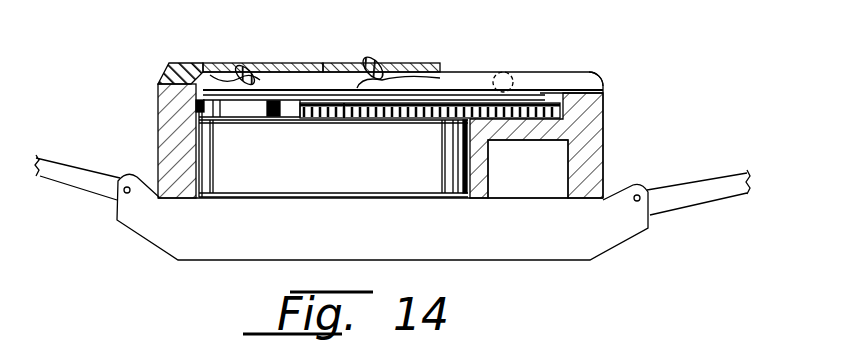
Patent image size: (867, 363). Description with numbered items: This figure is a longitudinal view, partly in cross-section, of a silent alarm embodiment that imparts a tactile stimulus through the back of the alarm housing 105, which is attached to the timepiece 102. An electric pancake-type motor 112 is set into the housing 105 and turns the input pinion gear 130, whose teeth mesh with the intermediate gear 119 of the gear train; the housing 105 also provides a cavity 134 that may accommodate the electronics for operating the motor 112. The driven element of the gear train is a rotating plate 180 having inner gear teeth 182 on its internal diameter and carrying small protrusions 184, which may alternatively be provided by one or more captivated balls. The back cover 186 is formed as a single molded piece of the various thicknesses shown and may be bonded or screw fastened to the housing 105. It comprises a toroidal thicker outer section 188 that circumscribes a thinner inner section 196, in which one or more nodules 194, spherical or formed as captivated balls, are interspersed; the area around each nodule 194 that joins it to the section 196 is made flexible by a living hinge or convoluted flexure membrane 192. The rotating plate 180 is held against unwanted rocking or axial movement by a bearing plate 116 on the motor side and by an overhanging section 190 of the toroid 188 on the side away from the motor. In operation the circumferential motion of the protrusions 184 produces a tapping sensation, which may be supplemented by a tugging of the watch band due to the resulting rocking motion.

The timepiece 102 is at (404, 238).
The alarm housing 105 is at (602, 146).
The electric pancake-type motor 112 is at (378, 180).
The bearing plate 116 is at (197, 110).
The intermediate gear 119 is at (426, 116).
The input pinion gear 130 is at (344, 117).
The cavity 134 is at (558, 180).
The rotating plate 180 is at (547, 96).
The inner gear teeth 182 is at (279, 117).
The protrusions 184 is at (441, 88).
The back cover 186 is at (594, 78).
The toroidal thicker outer section 188 is at (162, 76).
The overhanging section 190 is at (196, 106).
The living hinge or convoluted flexure membrane 192 is at (270, 66).
The nodules 194 is at (247, 66).
The thinner inner section 196 is at (300, 67).